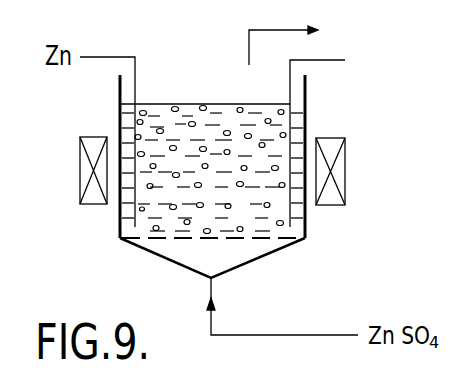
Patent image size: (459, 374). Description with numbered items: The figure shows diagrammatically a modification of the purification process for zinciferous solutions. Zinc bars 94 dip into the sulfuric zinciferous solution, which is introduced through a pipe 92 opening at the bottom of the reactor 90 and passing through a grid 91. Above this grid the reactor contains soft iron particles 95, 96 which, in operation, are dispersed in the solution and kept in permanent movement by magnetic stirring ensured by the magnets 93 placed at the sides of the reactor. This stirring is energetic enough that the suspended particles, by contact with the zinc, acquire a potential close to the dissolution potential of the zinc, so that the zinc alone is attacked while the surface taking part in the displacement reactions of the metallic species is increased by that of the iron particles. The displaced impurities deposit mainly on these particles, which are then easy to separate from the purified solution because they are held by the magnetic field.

The reactor 90 is at (118, 226).
The grid 91 is at (163, 236).
The pipe 92 is at (268, 334).
The magnets 93 is at (80, 161).
The zinc bars 94 is at (132, 120).
The soft iron particles 95 is at (264, 144).
The soft iron particles 96 is at (225, 125).